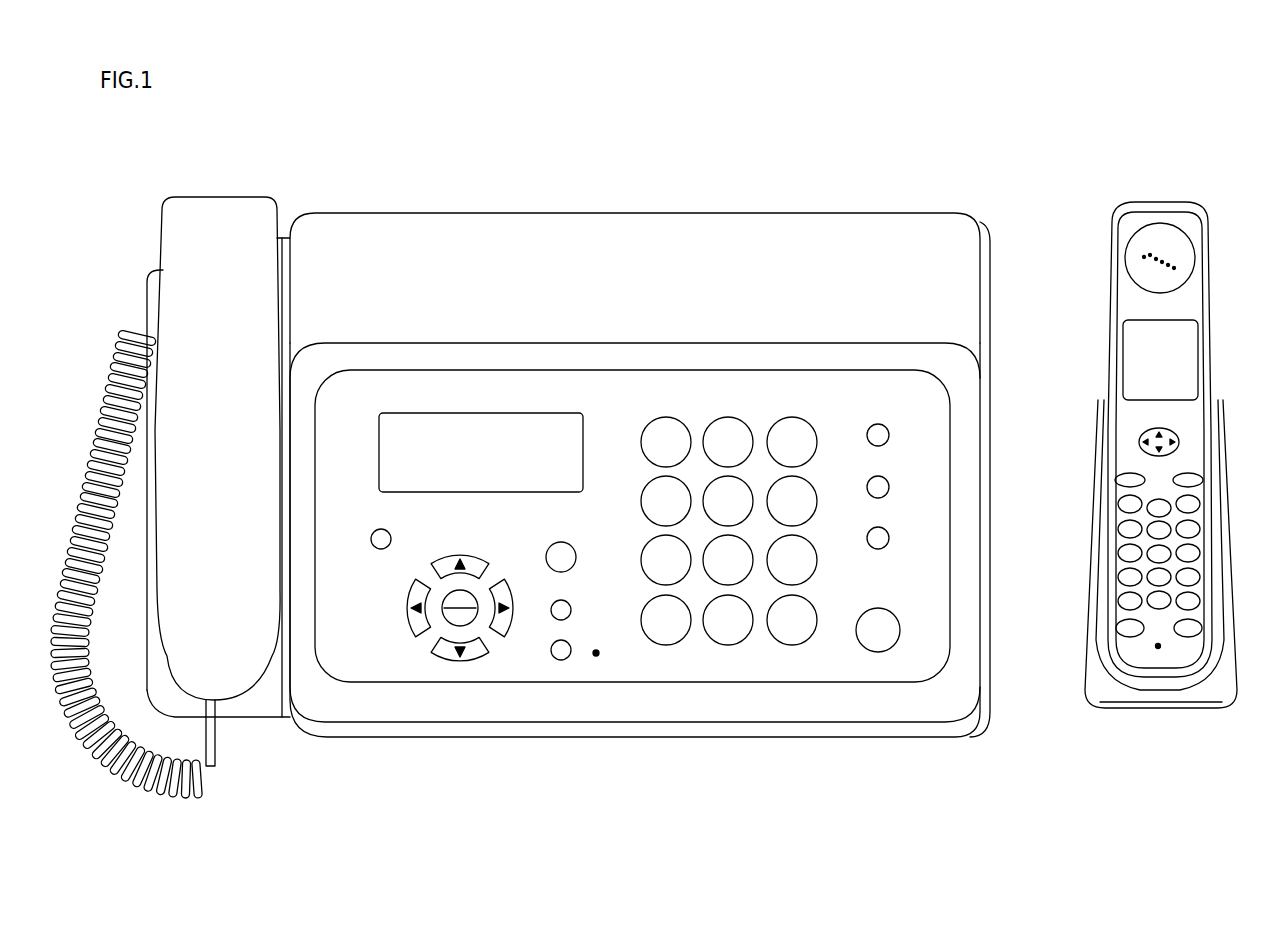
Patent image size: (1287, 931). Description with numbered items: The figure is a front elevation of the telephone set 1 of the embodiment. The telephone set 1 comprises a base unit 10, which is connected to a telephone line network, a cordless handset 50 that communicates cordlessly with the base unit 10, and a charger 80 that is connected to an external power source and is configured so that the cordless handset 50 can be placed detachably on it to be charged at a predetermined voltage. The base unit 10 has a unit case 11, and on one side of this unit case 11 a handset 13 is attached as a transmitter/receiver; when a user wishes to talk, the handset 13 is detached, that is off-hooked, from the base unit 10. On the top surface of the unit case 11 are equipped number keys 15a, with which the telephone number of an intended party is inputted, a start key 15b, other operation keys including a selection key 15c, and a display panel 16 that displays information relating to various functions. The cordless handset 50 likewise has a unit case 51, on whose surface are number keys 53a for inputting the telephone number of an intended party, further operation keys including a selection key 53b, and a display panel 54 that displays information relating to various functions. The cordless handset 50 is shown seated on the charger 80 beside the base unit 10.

The telephone set 1 is at (822, 108).
The base unit 10 is at (600, 745).
The unit case 11 is at (590, 236).
The handset 13 is at (211, 217).
The display panel 16 is at (470, 428).
The number keys 15a is at (738, 637).
The start key 15b is at (878, 632).
The selection key 15c is at (478, 658).
The cordless handset 50 is at (1158, 186).
The unit case 51 is at (1200, 297).
The display panel 54 is at (1188, 360).
The cursor key 53b is at (1175, 440).
The number keys 53a is at (1167, 603).
The charger 80 is at (1210, 670).